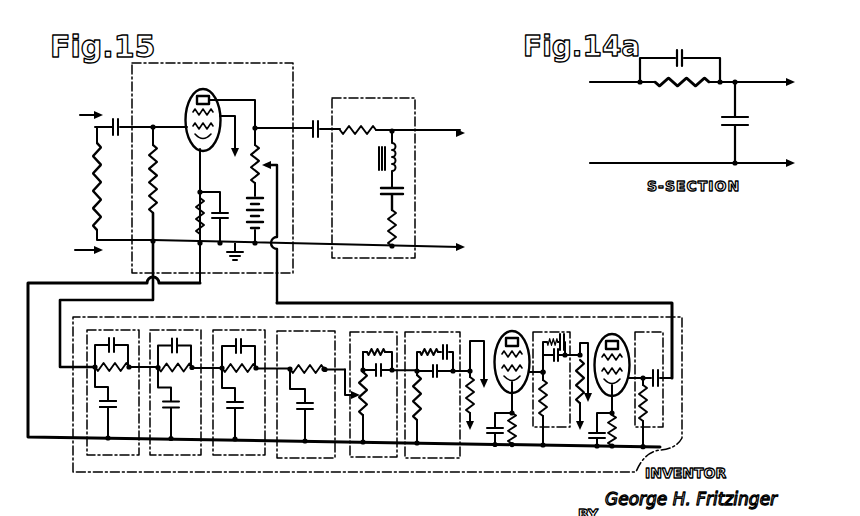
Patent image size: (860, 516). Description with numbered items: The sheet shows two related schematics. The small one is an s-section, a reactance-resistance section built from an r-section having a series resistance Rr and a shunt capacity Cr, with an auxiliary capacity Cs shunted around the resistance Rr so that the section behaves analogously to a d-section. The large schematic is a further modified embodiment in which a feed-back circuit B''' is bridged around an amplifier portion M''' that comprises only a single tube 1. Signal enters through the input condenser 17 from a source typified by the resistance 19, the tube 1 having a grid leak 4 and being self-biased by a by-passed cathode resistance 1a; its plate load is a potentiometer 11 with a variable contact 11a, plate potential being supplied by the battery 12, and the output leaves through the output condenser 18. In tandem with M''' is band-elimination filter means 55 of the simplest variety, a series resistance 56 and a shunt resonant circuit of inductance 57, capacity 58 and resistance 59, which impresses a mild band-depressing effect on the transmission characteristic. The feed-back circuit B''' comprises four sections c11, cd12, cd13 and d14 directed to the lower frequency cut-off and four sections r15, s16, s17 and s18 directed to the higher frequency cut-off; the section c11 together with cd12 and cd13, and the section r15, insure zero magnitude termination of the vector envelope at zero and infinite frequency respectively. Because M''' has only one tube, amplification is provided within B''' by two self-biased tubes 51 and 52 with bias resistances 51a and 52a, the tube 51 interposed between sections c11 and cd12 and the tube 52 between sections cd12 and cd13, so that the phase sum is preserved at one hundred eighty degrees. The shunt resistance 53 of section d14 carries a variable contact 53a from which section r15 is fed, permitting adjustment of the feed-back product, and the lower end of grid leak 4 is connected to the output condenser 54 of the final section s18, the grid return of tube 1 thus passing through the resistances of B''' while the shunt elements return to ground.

In FIG. 15, the amplifying tube 1 is at (211, 98).
In FIG. 15, the by-passed bias resistance 1a is at (197, 225).
In FIG. 15, the grid leak 4 is at (157, 186).
In FIG. 15, the plate load resistance 11 is at (250, 165).
In FIG. 15, the variable contact 11a is at (278, 220).
In FIG. 15, the battery 12 is at (247, 203).
In FIG. 15, the input condenser 17 is at (115, 119).
In FIG. 15, the output condenser 18 is at (315, 121).
In FIG. 15, the input resistance 19 is at (92, 182).
In FIG. 15, the amplifying tube 51 is at (618, 334).
In FIG. 15, the by-passed bias resistance 51a is at (616, 447).
In FIG. 15, the amplifying tube 52 is at (518, 331).
In FIG. 15, the by-passed bias resistance 52a is at (522, 450).
In FIG. 15, the shunt resistance 53 is at (364, 386).
In FIG. 15, the variable contact 53a is at (360, 395).
In FIG. 15, the output condenser 54 is at (113, 404).
In FIG. 15, the band-elimination filter means 55 is at (383, 98).
In FIG. 15, the series resistance 56 is at (362, 123).
In FIG. 15, the inductance 57 is at (405, 157).
In FIG. 15, the capacity 58 is at (405, 190).
In FIG. 15, the resistance 59 is at (400, 226).
In FIG. 15, the amplifier portion M''' is at (212, 151).
In FIG. 15, the feed-back circuit B''' is at (377, 414).
In FIG. 15, the s-section s18 is at (122, 457).
In FIG. 15, the s-section s17 is at (182, 457).
In FIG. 15, the s-section s16 is at (240, 457).
In FIG. 15, the r-section r15 is at (311, 460).
In FIG. 15, the d-section d14 is at (380, 463).
In FIG. 15, the cd-section cd13 is at (441, 462).
In FIG. 15, the cd-section cd12 is at (563, 453).
In FIG. 15, the c-section c11 is at (666, 423).
In FIG. 14A, the auxiliary capacity Cs is at (685, 49).
In FIG. 14A, the series resistance Rr is at (680, 93).
In FIG. 14A, the shunt capacity Cr is at (750, 125).